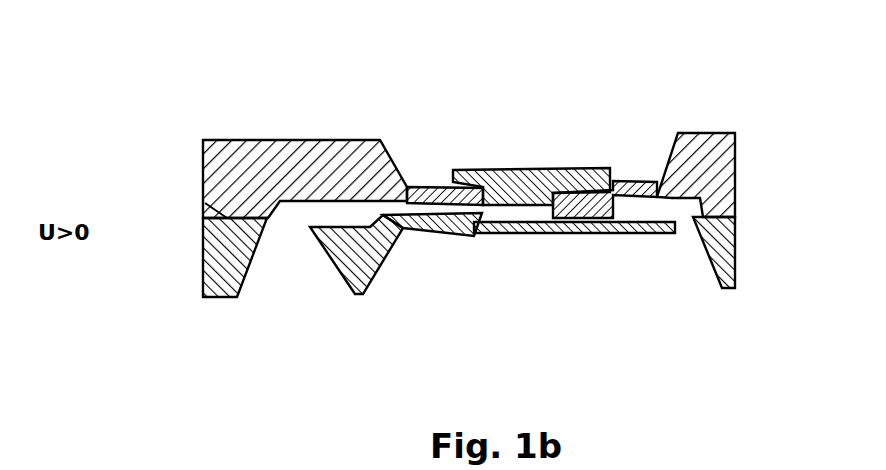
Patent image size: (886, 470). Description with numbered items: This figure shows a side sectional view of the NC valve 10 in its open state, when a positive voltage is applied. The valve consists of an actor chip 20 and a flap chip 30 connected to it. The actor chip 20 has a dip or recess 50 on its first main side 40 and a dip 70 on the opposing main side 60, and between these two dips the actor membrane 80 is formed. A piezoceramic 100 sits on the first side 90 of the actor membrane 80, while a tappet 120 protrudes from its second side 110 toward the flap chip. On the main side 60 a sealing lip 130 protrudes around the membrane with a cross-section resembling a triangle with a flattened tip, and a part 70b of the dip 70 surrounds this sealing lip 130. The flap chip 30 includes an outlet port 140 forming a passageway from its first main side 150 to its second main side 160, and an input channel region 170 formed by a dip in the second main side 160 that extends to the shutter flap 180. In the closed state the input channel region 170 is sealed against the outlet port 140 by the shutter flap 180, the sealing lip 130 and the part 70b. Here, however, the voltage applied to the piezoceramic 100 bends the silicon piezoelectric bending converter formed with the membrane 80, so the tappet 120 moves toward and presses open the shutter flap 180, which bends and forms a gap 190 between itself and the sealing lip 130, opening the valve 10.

The NC valve 10 is at (787, 107).
The actor chip 20 is at (735, 170).
The flap chip 30 is at (735, 248).
The first main side 40 is at (268, 138).
The dip or recess 50 is at (422, 146).
The opposing main side 60 is at (268, 222).
The dip 70 is at (312, 219).
The part of dip 70b is at (685, 220).
The actor membrane 80 is at (633, 184).
The first side of actor membrane 90 is at (432, 184).
The piezoceramic 100 is at (556, 168).
The second side of actor membrane 110 is at (590, 238).
The tappet 120 is at (470, 238).
The sealing lip 130 is at (688, 208).
The outlet port 140 is at (256, 298).
The first main side of flap chip 150 is at (205, 203).
The second main side of flap chip 160 is at (218, 300).
The input channel region 170 is at (685, 292).
The shutter flap 180 is at (521, 238).
The gap 190 is at (654, 212).